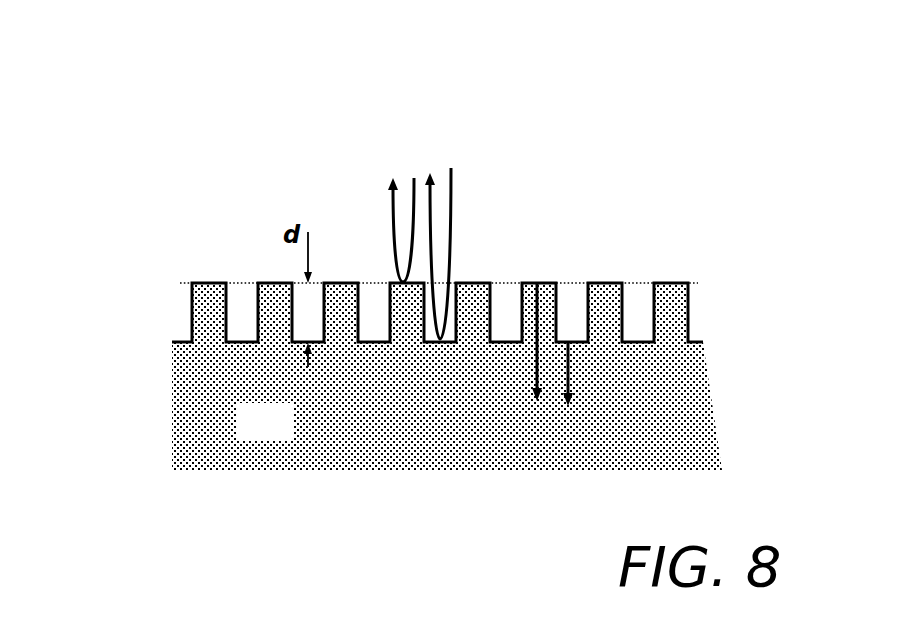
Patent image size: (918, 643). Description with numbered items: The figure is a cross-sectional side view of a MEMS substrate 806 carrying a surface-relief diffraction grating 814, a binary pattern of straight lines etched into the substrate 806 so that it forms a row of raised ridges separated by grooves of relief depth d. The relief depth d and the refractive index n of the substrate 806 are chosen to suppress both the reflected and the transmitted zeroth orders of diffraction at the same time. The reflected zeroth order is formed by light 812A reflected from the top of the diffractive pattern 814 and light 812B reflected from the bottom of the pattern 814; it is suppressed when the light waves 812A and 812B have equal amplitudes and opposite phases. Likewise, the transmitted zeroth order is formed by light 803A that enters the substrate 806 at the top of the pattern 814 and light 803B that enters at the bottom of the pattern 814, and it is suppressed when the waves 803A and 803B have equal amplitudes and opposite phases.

The MEMS substrate 806 is at (288, 434).
The surface-relief diffraction grating 814 is at (154, 305).
The light reflected from the top of the diffractive pattern 812A is at (390, 213).
The light reflected from the bottom of the pattern 812B is at (431, 173).
The light entering the substrate at the top of the diffractive pattern 803A is at (537, 383).
The light entering the substrate at the bottom of the pattern 803B is at (568, 375).